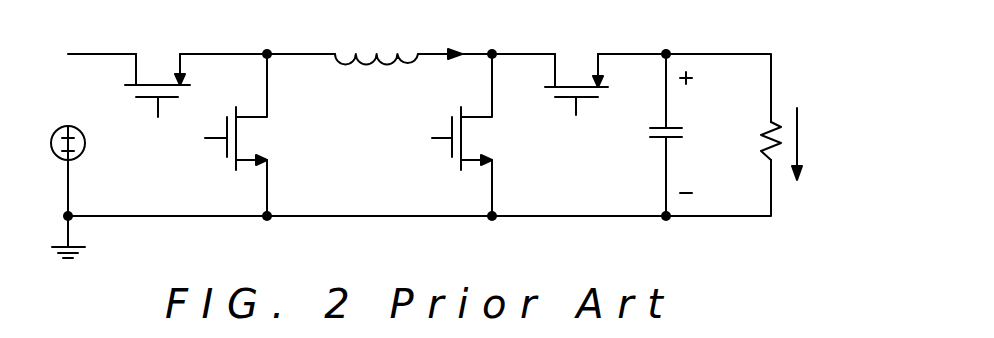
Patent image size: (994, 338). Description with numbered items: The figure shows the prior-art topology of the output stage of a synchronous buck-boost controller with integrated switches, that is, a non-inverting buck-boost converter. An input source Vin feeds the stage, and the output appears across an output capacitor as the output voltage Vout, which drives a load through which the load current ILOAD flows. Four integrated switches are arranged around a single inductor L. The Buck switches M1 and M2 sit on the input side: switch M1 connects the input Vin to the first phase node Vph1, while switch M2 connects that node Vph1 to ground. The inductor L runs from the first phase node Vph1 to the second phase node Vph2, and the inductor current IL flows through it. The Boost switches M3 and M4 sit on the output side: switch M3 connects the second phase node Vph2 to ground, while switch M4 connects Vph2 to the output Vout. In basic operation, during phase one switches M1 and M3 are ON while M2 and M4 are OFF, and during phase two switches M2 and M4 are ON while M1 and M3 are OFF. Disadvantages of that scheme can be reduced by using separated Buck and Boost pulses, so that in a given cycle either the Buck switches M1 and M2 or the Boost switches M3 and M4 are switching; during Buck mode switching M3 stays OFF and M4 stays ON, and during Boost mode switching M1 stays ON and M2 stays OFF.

The switch M1 is at (157, 75).
The switch M2 is at (244, 135).
The switch M3 is at (471, 135).
The switch M4 is at (576, 74).
The input voltage source Vin is at (47, 143).
The output voltage / capacitor Vout is at (691, 135).
The phase node 1 Vph1 is at (274, 41).
The phase node 2 Vph2 is at (502, 41).
The inductor L is at (376, 59).
The inductor current IL is at (443, 45).
The load current / load resistor ILOAD is at (807, 144).